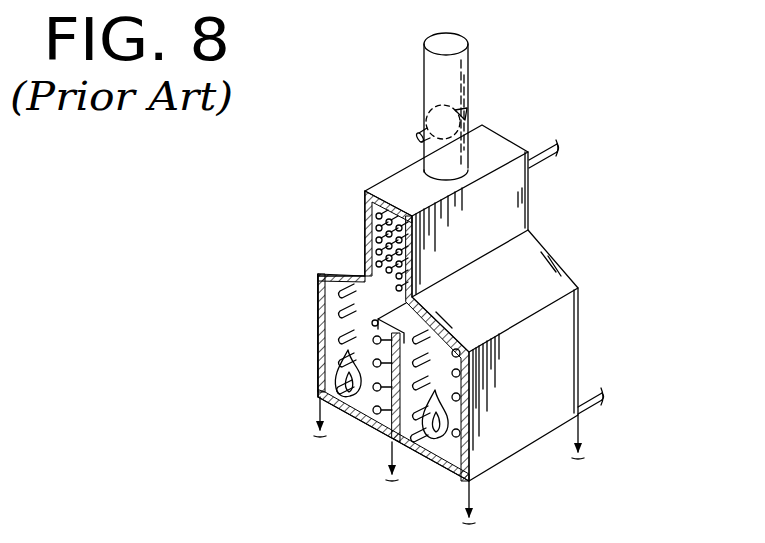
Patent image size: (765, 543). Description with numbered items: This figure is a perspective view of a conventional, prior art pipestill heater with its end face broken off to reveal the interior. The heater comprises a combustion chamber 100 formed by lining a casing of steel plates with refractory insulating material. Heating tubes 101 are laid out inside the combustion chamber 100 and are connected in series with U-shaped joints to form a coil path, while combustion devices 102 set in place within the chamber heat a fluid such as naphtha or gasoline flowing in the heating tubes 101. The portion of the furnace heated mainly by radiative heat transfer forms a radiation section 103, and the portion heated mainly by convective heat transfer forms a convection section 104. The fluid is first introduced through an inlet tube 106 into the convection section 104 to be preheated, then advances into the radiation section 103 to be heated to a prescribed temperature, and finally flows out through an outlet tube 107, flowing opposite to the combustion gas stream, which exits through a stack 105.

The combustion chamber 100 is at (518, 430).
The heating tubes 101 is at (327, 352).
The combustion devices 102 is at (350, 400).
The radiation section 103 is at (310, 388).
The convection section 104 is at (358, 272).
The stack 105 is at (437, 92).
The inlet tube 106 is at (558, 150).
The outlet tube 107 is at (597, 402).